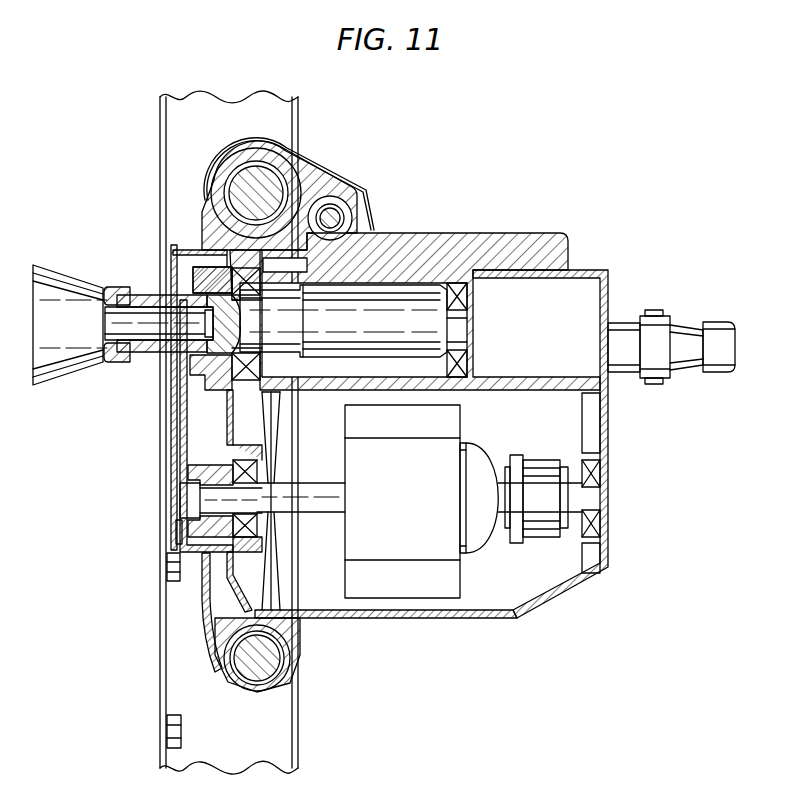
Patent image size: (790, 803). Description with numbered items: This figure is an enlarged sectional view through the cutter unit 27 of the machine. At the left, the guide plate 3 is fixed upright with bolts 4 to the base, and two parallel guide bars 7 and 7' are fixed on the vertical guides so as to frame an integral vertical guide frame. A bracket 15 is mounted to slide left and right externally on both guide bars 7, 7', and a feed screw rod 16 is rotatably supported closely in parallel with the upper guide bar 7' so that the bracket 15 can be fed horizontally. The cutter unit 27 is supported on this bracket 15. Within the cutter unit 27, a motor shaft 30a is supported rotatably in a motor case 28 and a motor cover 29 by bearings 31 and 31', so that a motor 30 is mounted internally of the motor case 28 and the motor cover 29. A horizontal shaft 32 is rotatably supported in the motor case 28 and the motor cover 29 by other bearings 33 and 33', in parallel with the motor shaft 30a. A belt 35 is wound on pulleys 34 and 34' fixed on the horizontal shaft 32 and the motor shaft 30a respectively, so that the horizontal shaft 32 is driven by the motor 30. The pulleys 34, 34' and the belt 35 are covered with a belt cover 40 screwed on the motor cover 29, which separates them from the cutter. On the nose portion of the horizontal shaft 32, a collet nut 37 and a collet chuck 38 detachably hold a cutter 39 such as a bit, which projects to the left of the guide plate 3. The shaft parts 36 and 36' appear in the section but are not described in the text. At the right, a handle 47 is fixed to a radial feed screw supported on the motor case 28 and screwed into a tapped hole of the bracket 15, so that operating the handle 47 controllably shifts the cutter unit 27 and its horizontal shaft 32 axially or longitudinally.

The guide plate 3 is at (298, 720).
The bolts 4 is at (170, 567).
The guide bar 7 is at (274, 655).
The guide bar 7' is at (288, 178).
The bracket 15 is at (503, 240).
The feed screw rod 16 is at (332, 210).
The cutter unit 27 is at (612, 290).
The motor case 28 is at (490, 618).
The motor cover 29 is at (232, 598).
The motor 30 is at (415, 560).
The motor shaft 30a is at (288, 500).
The bearing 31 is at (275, 502).
The bearing 31' is at (586, 498).
The horizontal shaft 32 is at (388, 292).
The bearing 33 is at (247, 324).
The bearing 33' is at (466, 288).
The pulley 34 is at (183, 334).
The pulley 34' is at (168, 426).
The belt 35 is at (195, 418).
The lower stub shaft 36 is at (187, 501).
The tool drive shaft 36' is at (172, 344).
The collet nut 37 is at (135, 287).
The collet chuck 38 is at (120, 288).
The cutter 39 is at (66, 378).
The belt cover 40 is at (174, 533).
The handle 47 is at (718, 372).